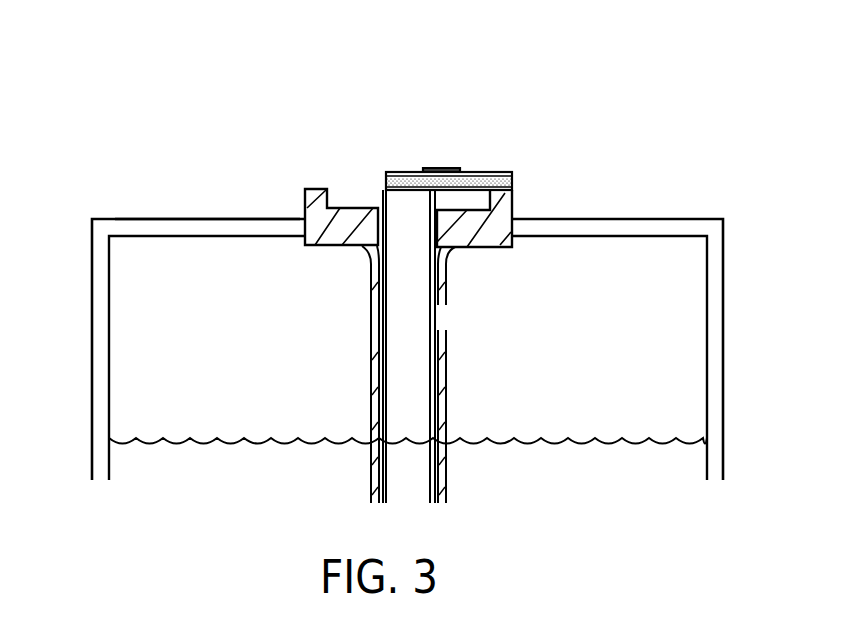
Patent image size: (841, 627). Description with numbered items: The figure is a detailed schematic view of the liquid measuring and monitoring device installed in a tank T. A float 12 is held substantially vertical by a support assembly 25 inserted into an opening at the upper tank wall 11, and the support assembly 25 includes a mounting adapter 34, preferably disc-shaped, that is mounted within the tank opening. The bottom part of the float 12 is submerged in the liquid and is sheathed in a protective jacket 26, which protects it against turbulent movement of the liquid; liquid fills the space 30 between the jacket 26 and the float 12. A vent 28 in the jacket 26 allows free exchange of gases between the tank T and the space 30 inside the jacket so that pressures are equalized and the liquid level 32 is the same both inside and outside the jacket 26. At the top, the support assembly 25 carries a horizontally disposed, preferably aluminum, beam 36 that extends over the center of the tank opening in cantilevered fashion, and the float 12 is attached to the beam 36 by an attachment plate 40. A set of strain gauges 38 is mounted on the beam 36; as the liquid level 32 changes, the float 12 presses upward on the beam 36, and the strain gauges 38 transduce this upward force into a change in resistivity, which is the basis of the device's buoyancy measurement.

The tank T is at (98, 306).
The upper tank wall 11 is at (164, 226).
The float 12 is at (405, 397).
The support assembly 25 is at (478, 133).
The protective jacket 26 is at (446, 487).
The vent 28 is at (441, 318).
The space inside the jacket 30 is at (378, 325).
The liquid level 32 is at (622, 438).
The mounting adapter 34 is at (318, 214).
The beam 36 is at (496, 171).
The strain gauges 38 is at (440, 167).
The attachment plate 40 is at (512, 186).